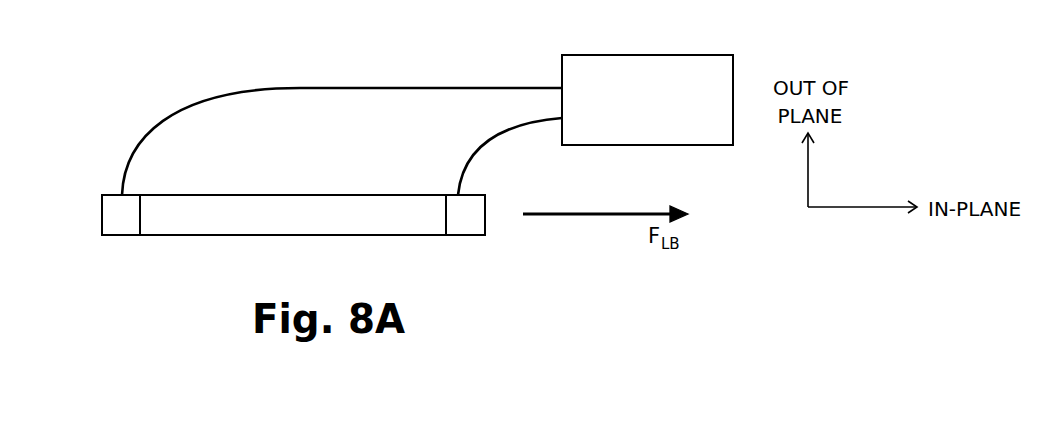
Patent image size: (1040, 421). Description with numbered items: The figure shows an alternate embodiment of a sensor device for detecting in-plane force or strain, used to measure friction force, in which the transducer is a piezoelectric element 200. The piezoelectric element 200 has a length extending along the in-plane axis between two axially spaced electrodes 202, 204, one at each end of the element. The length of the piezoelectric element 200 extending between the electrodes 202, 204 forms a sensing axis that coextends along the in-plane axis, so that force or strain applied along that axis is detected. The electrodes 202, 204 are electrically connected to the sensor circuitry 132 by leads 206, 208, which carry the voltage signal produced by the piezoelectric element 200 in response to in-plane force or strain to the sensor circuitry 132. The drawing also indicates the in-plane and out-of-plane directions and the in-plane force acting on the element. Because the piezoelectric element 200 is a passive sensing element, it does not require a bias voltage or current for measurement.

The piezoelectric element 200 is at (300, 195).
The electrode 202 is at (120, 223).
The electrode 204 is at (468, 222).
The first wire 206 is at (418, 88).
The second wire 208 is at (487, 146).
The sensor circuitry 132 is at (665, 55).